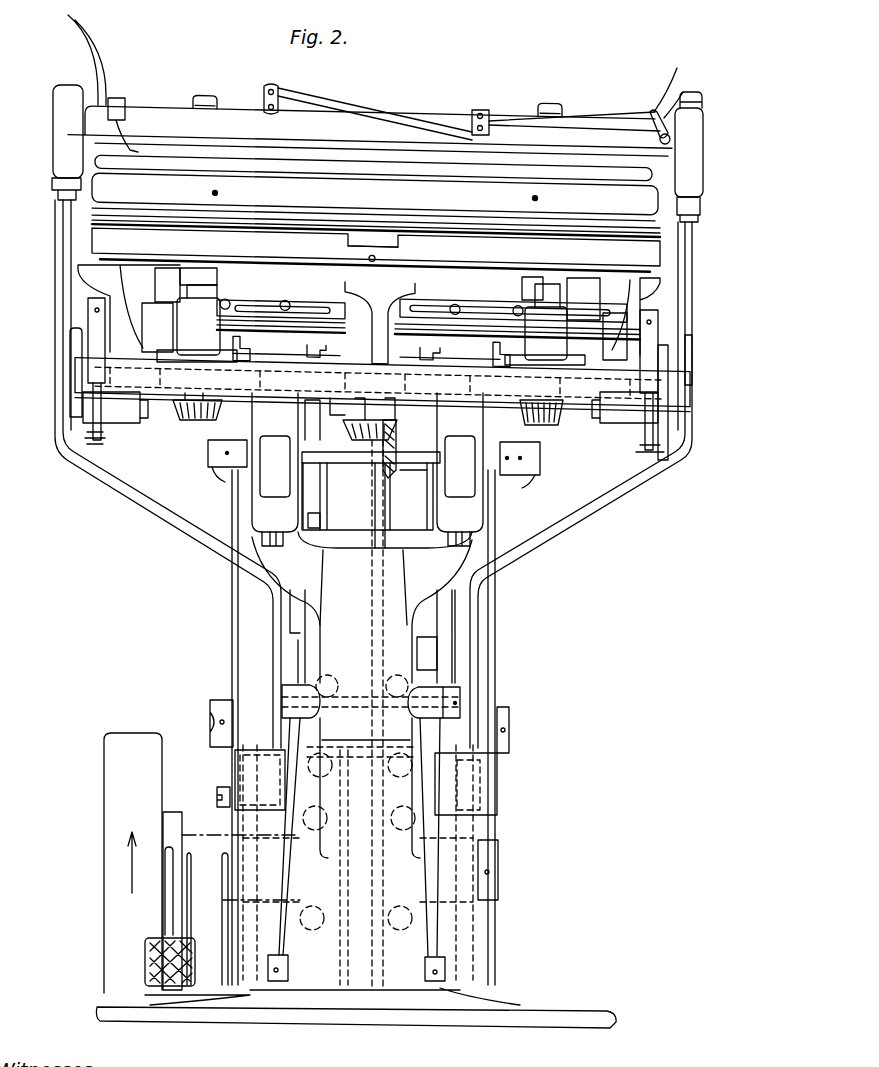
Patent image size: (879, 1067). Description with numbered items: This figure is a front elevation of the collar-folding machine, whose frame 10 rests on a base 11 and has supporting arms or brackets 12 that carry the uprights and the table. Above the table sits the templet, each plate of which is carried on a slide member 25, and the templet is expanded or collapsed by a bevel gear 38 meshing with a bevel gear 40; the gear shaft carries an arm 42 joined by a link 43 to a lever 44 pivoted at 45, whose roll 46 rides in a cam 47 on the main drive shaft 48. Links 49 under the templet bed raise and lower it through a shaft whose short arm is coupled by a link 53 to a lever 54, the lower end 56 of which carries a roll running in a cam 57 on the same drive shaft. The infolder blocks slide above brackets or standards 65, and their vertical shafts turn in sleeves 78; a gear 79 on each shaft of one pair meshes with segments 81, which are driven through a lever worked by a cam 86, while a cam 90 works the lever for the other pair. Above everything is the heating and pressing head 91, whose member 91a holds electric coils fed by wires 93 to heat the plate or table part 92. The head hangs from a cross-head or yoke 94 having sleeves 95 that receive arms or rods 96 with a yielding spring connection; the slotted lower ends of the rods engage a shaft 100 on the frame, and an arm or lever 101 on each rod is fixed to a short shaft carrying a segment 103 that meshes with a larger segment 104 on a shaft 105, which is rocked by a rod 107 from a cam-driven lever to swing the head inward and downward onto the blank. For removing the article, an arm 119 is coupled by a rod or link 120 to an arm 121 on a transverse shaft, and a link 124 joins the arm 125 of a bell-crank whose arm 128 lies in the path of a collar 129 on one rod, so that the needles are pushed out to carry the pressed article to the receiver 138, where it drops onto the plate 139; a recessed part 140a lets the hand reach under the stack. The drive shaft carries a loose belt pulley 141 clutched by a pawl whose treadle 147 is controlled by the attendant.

The frame 10 is at (416, 740).
The base 11 is at (376, 1018).
The supporting arms or brackets 12 is at (294, 572).
The slide member 25 is at (268, 300).
The bevel gear 38 is at (365, 420).
The bevel gear 40 is at (404, 446).
The arm 42 is at (314, 488).
The link 43 is at (318, 525).
The lever 44 is at (362, 704).
The pivot 45 is at (210, 718).
The roll 46 is at (290, 803).
The cam 47 is at (233, 820).
The main drive shaft 48 is at (500, 874).
The links 49 is at (308, 352).
The link 53 is at (427, 518).
The lever 54 is at (440, 678).
The lower end of lever 56 is at (446, 848).
The cam 57 is at (440, 920).
The brackets or standards 65 is at (395, 292).
The sleeve 78 is at (205, 298).
The gear 79 is at (192, 422).
The segments 81 is at (215, 472).
The cam 86 is at (470, 836).
The cam 90 is at (240, 834).
The heating and pressing head 91 is at (711, 180).
The member 91a is at (300, 170).
The plate or table part 92 is at (650, 208).
The wires 93 is at (100, 110).
The cross-head or yoke 94 is at (152, 118).
The sleeves 95 is at (58, 150).
The arms or rods 96 is at (56, 288).
The shaft 100 is at (282, 702).
The arm or lever 101 is at (75, 382).
The segment 103 is at (102, 444).
The segment 104 is at (86, 356).
The shaft 105 is at (586, 332).
The rod 107 is at (376, 498).
The arm 119 is at (265, 95).
The rod or link 120 is at (332, 82).
The arm 121 is at (484, 108).
The link 124 is at (615, 120).
The arm of bell-crank lever 125 is at (655, 112).
The arm of bell-crank lever 128 is at (679, 70).
The collar 129 is at (703, 99).
The receiver 138 is at (92, 250).
The plate 139 is at (92, 216).
The recessed part 140a is at (372, 243).
The belt pulley 141 is at (104, 906).
The treadle 147 is at (172, 988).